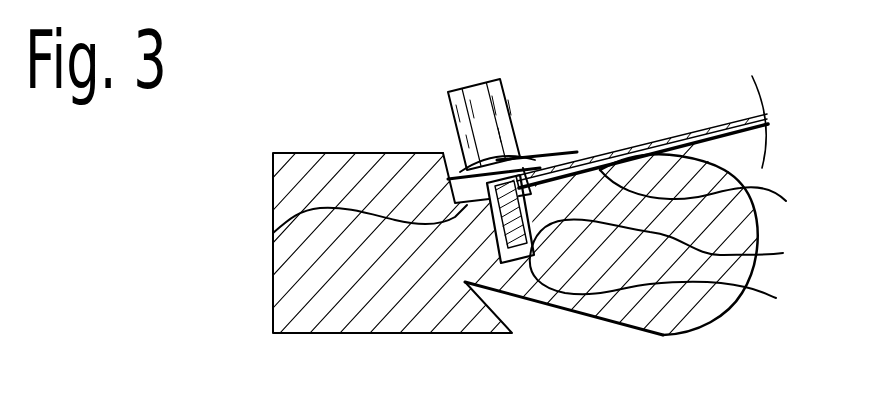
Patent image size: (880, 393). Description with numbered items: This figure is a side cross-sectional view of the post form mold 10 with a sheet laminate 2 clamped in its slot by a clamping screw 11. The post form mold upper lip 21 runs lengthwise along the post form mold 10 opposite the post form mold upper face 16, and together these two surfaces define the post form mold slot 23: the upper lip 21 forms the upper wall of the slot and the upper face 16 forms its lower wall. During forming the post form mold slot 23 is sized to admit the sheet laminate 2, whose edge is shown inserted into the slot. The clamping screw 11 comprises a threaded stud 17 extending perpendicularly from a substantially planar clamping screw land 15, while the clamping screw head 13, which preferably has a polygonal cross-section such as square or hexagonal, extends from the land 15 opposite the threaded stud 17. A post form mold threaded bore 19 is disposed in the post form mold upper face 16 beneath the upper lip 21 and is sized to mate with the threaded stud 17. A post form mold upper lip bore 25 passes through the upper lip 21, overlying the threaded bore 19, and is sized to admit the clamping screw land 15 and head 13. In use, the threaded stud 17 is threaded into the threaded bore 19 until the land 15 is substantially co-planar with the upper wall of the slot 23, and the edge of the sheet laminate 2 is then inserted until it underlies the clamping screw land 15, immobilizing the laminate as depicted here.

The sheet laminate 2 is at (682, 137).
The post form mold 10 is at (172, 183).
The clamping screw 11 is at (514, 140).
The clamping screw head 13 is at (470, 82).
The clamping screw land 15 is at (273, 233).
The post form mold upper face 16 is at (708, 200).
The clamping screw threaded stud 17 is at (671, 247).
The post form mold threaded bore 19 is at (671, 296).
The post form mold upper lip 21 is at (572, 155).
The post form mold slot 23 is at (556, 155).
The post form mold upper lip bore 25 is at (447, 174).